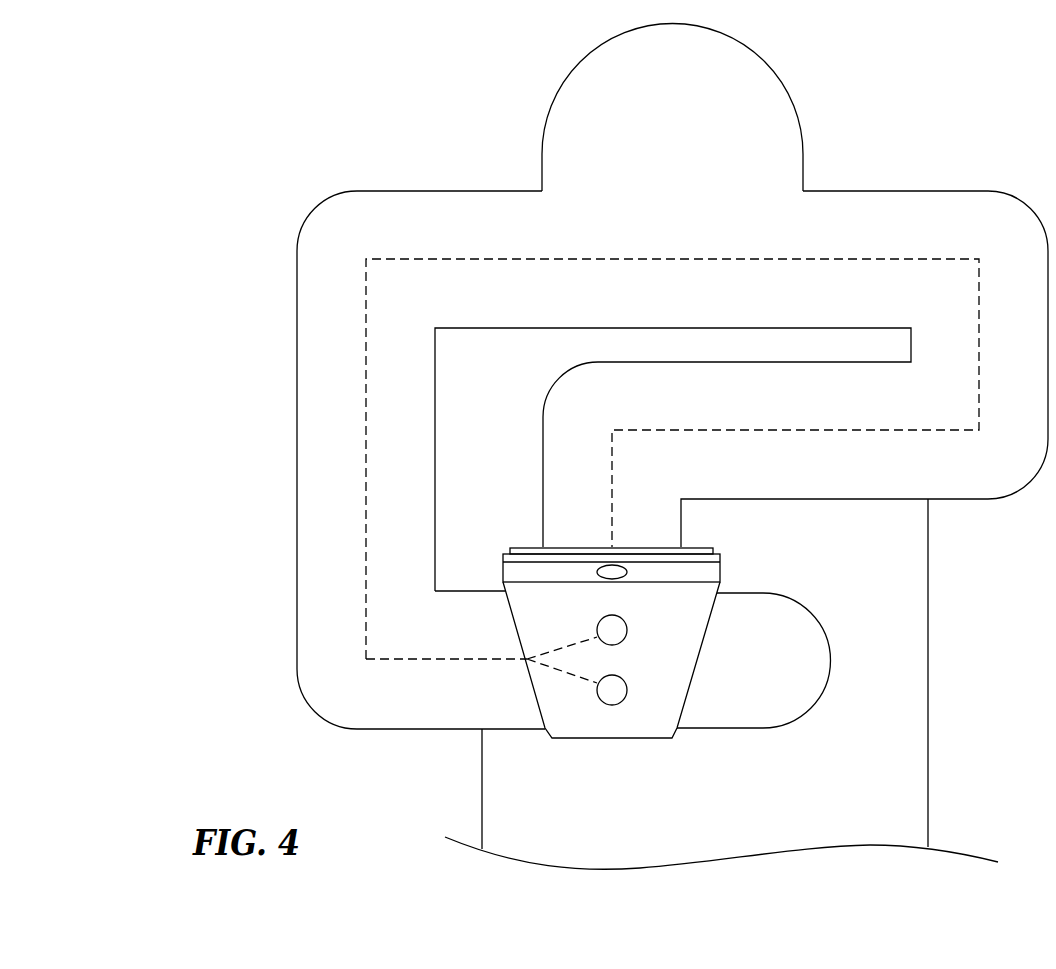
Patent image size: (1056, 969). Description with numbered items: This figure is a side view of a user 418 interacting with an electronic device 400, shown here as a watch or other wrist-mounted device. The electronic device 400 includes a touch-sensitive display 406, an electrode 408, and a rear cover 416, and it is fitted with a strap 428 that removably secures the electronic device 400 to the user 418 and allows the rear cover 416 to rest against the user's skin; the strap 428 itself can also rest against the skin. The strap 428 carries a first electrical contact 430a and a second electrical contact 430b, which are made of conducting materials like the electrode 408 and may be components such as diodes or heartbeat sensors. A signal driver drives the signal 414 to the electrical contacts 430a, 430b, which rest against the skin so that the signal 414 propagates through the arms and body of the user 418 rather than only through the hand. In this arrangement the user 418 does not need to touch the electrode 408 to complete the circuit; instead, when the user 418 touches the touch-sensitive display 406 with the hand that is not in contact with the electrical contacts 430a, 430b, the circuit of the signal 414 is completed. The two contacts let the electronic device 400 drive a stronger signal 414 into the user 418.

The electronic device 400 is at (527, 537).
The touch-sensitive display 406 is at (697, 548).
The electrode 408 is at (600, 581).
The signal 414 is at (863, 259).
The rear cover 416 is at (722, 570).
The user 418 is at (790, 98).
The strap 428 is at (693, 677).
The first electrical contact 430a is at (628, 631).
The second electrical contact 430b is at (622, 702).